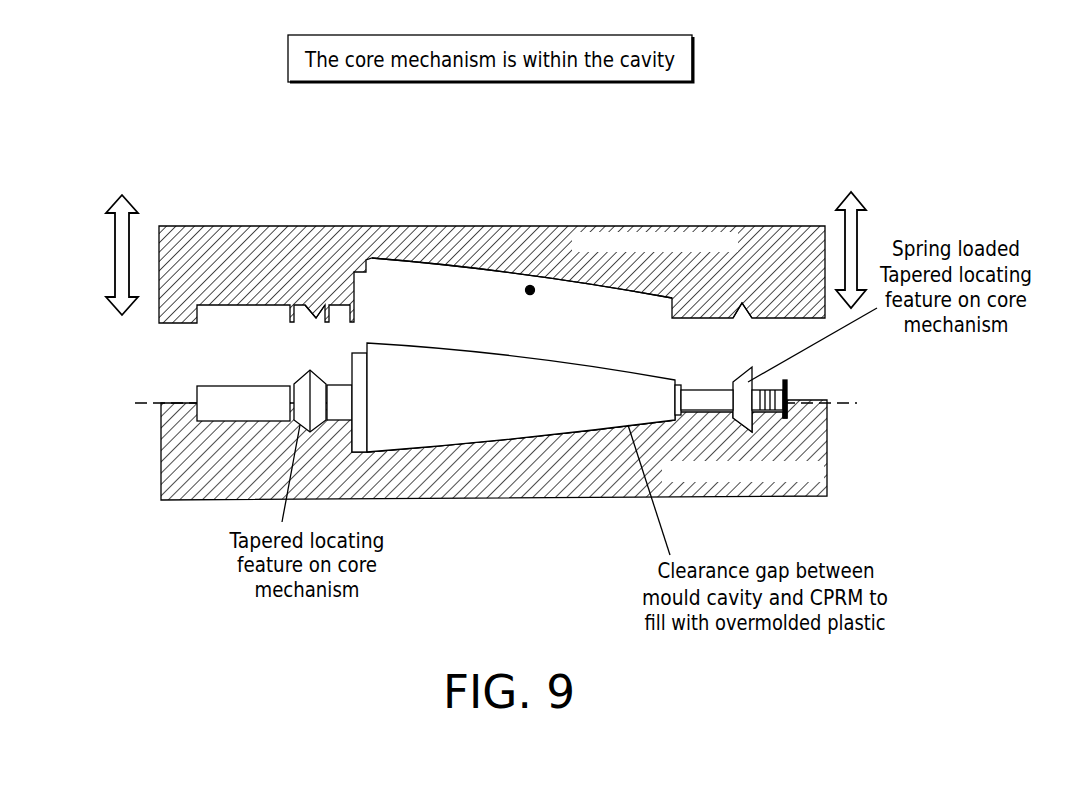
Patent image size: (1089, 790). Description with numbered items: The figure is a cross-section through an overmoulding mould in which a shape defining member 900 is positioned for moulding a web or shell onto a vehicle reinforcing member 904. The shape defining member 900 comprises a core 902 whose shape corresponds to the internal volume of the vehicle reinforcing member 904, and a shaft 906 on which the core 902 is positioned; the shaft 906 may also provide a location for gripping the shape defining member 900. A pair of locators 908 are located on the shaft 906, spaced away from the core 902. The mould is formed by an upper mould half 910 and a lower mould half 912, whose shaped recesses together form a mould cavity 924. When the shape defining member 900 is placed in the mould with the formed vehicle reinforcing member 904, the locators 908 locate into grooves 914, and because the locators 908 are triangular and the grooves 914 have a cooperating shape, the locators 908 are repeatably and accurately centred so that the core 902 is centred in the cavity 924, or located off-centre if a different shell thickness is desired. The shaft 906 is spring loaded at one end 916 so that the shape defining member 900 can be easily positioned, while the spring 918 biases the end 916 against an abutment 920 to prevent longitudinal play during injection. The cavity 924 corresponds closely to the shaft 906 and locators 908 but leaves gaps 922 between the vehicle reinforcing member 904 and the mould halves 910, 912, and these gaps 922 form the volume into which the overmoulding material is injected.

The shape defining member 900 is at (283, 376).
The core 902 is at (360, 355).
The vehicle reinforcing member 904 is at (427, 427).
The shaft 906 is at (200, 386).
The locators 908 is at (317, 390).
The upper mould half 910 is at (249, 226).
The lower mould half 912 is at (204, 475).
The grooves 914 is at (308, 303).
The spring loaded end 916 is at (786, 380).
The spring 918 is at (766, 392).
The abutment 920 is at (790, 381).
The gaps 922 is at (516, 428).
The mould cavity 924 is at (530, 290).